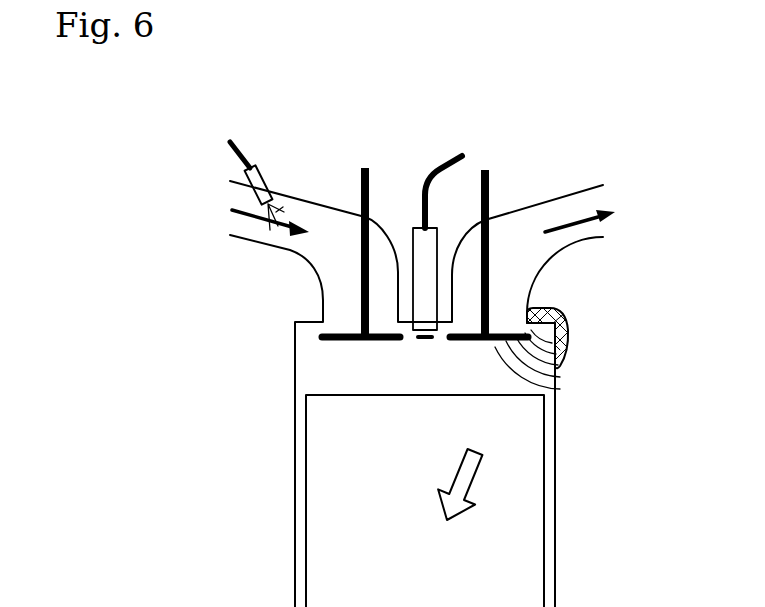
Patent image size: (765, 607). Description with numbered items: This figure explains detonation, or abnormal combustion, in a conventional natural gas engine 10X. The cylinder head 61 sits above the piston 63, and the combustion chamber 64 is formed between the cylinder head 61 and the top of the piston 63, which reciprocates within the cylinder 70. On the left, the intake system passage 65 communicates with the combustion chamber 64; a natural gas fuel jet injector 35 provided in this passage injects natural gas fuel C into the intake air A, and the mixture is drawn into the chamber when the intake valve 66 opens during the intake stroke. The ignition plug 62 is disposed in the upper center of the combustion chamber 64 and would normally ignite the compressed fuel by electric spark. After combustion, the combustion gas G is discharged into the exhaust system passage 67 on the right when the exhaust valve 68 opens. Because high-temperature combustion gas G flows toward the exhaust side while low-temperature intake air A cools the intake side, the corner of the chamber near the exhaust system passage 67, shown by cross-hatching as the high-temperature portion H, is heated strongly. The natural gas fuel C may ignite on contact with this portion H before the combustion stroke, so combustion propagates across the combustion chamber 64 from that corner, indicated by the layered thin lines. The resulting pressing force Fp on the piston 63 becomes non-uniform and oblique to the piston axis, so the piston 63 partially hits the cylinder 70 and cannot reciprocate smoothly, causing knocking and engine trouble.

The natural gas engine 10X is at (533, 158).
The natural gas fuel jet injector 35 is at (266, 186).
The cylinder head 61 is at (295, 355).
The ignition plug 62 is at (398, 245).
The piston 63 is at (306, 468).
The combustion chamber 64 is at (498, 378).
The intake system passage 65 is at (255, 242).
The intake valve 66 is at (330, 345).
The exhaust system passage 67 is at (600, 237).
The exhaust valve 68 is at (463, 342).
The cylinder 70 is at (295, 537).
The intake air A is at (257, 217).
The natural gas fuel C is at (284, 200).
The combustion gas G is at (649, 214).
The high-temperature portion H is at (567, 327).
The pressing force Fp is at (448, 515).